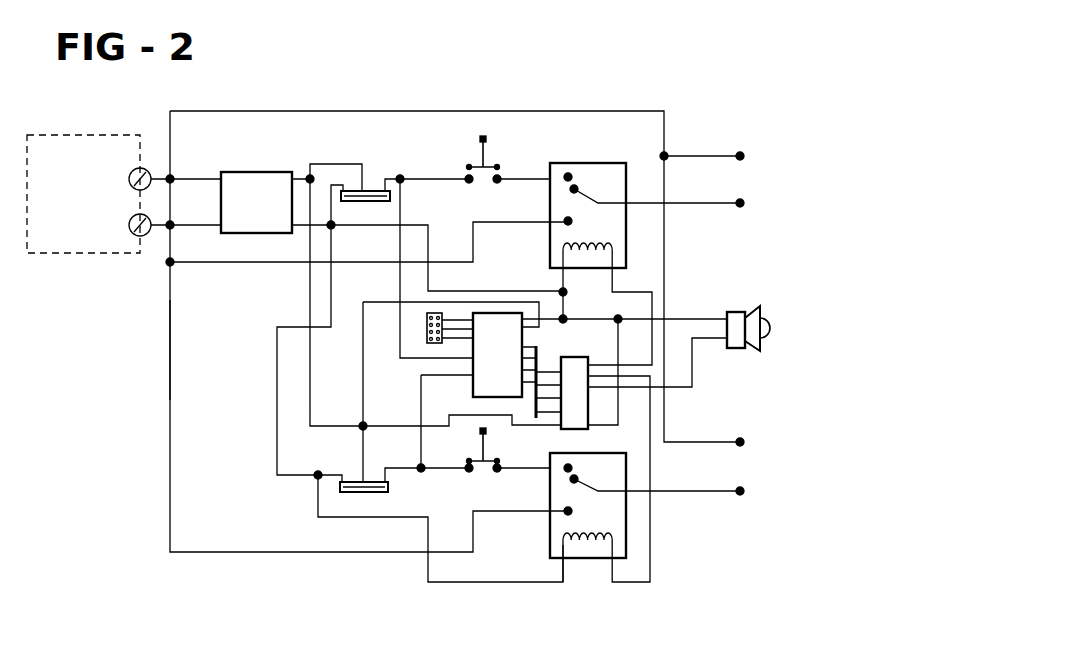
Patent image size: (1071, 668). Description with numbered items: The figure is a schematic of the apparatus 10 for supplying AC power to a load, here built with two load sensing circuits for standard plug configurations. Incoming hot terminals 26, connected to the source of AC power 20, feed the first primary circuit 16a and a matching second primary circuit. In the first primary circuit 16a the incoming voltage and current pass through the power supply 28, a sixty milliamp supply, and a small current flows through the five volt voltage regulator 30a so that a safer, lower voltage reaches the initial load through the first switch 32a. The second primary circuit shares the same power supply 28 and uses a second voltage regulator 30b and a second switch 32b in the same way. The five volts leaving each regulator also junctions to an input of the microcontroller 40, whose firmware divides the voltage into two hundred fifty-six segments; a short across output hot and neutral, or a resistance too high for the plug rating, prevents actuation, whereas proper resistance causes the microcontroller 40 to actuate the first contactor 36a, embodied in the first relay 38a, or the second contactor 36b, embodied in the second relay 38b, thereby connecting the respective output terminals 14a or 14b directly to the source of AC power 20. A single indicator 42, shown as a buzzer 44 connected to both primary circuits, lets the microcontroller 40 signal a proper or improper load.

The apparatus 10 is at (122, 444).
The output terminals 14a is at (745, 124).
The output terminals 14b is at (712, 502).
The first primary circuit 16a is at (621, 106).
The source of AC power 20 is at (78, 256).
The incoming hot terminals 26 is at (127, 259).
The power supply 28 is at (260, 172).
The voltage regulator 30a is at (378, 191).
The second voltage regulator 30b is at (365, 494).
The first switch 32a is at (469, 146).
The second switch 32b is at (464, 480).
The first contactor 36a is at (573, 158).
The second contactor 36b is at (588, 568).
The first relay 38a is at (626, 222).
The second relay 38b is at (626, 538).
The microcontroller 40 is at (473, 385).
The indicator 42 is at (757, 388).
The buzzer 44 is at (733, 312).